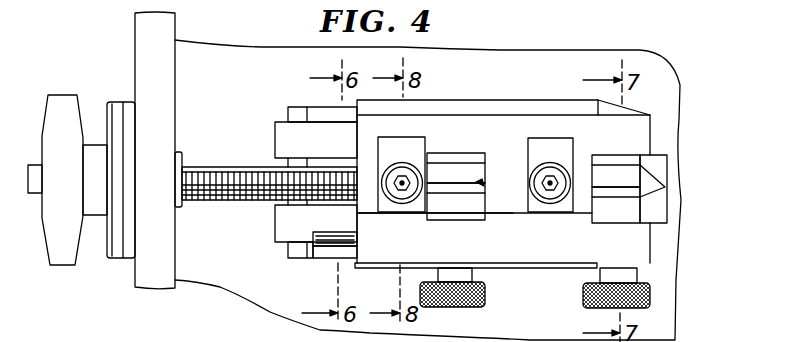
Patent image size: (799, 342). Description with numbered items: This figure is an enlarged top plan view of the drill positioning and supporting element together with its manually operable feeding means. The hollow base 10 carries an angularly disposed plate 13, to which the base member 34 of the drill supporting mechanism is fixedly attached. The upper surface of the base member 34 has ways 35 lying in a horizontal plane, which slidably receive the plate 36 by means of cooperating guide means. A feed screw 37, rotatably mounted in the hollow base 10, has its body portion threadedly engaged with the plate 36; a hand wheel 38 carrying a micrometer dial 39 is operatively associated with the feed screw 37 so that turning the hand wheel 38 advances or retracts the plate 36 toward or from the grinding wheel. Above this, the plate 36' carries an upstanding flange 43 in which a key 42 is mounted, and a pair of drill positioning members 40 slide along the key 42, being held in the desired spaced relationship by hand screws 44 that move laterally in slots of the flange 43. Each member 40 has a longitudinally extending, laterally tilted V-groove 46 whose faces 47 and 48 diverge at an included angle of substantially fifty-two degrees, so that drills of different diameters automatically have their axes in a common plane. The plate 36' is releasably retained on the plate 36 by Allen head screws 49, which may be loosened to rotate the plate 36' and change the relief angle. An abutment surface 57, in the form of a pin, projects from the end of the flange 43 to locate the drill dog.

The hollow base 10 is at (133, 284).
The angularly disposed plate 13 is at (543, 65).
The base member 34 is at (317, 257).
The ways 35 is at (285, 133).
The plate 36 is at (503, 169).
The plate 36' is at (590, 99).
The feed screw 37 is at (207, 175).
The hand wheel 38 is at (57, 95).
The micrometer dial 39 is at (120, 102).
The drill positioning members 40 is at (474, 210).
The key 42 is at (513, 216).
The upstanding flange 43 is at (508, 255).
The hand screws 44 is at (487, 300).
The V-groove 46 is at (482, 183).
The face 47 is at (455, 188).
The face 48 is at (447, 170).
The Allen head screw 49 is at (402, 164).
The abutment surface 57 is at (328, 234).